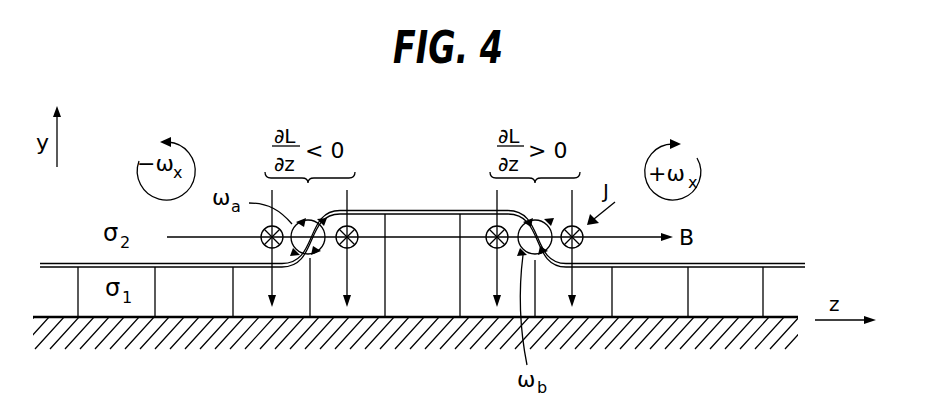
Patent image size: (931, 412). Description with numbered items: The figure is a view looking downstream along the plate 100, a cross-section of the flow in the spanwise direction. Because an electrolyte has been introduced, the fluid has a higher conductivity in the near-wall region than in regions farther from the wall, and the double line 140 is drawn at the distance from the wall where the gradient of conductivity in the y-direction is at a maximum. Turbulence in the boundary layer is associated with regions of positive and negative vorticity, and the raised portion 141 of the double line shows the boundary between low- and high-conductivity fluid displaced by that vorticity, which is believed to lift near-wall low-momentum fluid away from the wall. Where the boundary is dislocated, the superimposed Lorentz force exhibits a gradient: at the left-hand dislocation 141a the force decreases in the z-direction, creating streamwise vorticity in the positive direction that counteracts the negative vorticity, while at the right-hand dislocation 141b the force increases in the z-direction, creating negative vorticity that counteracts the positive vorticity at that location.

The plate 100 is at (777, 317).
The double line 140 is at (715, 263).
The raised portion of the double line 141 is at (427, 209).
The left-hand dislocation 141a is at (325, 210).
The right-hand dislocation 141b is at (522, 211).